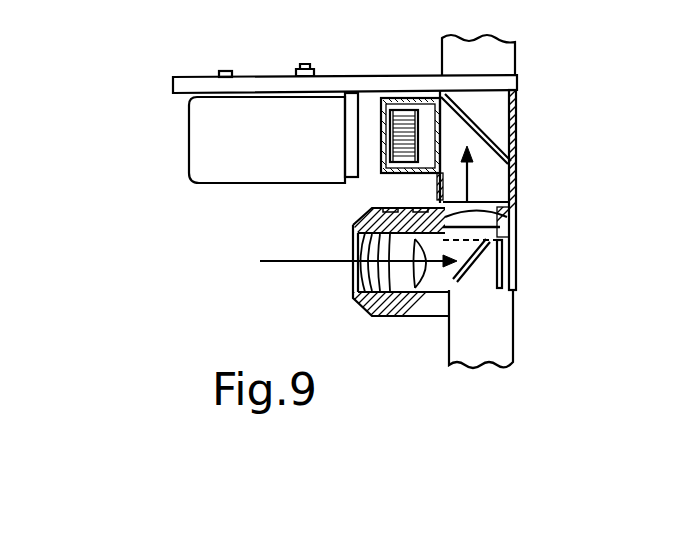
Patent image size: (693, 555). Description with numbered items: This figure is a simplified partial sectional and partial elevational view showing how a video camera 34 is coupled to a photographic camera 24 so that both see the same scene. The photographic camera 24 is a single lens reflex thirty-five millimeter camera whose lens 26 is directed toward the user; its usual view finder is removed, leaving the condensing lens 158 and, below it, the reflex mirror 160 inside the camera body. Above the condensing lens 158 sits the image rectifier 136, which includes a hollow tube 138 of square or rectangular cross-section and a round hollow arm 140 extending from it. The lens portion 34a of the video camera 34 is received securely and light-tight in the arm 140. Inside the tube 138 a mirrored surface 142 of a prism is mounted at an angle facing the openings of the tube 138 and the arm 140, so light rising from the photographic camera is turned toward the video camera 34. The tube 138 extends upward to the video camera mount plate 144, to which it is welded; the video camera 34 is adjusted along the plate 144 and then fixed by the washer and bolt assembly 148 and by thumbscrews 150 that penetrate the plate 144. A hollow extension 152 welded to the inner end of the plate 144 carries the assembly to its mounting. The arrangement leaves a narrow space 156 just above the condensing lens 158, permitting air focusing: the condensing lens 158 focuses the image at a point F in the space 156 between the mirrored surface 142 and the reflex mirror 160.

The photographic camera 24 is at (488, 348).
The lens 26 is at (395, 303).
The video camera 34 is at (207, 146).
The lens portion 34a is at (369, 150).
The image rectifier apparatus 136 is at (565, 78).
The hollow tube 138 is at (511, 167).
The round hollow arm 140 is at (417, 98).
The mirrored surface 142 is at (428, 132).
The video camera mount plate 144 is at (369, 87).
The washer and bolt assembly 148 is at (304, 66).
The thumbscrews 150 is at (220, 72).
The hollow extension 152 is at (493, 57).
The narrow space 156 is at (490, 213).
The point F is at (483, 223).
The condensing lens 158 is at (500, 222).
The reflex mirror 160 is at (465, 267).